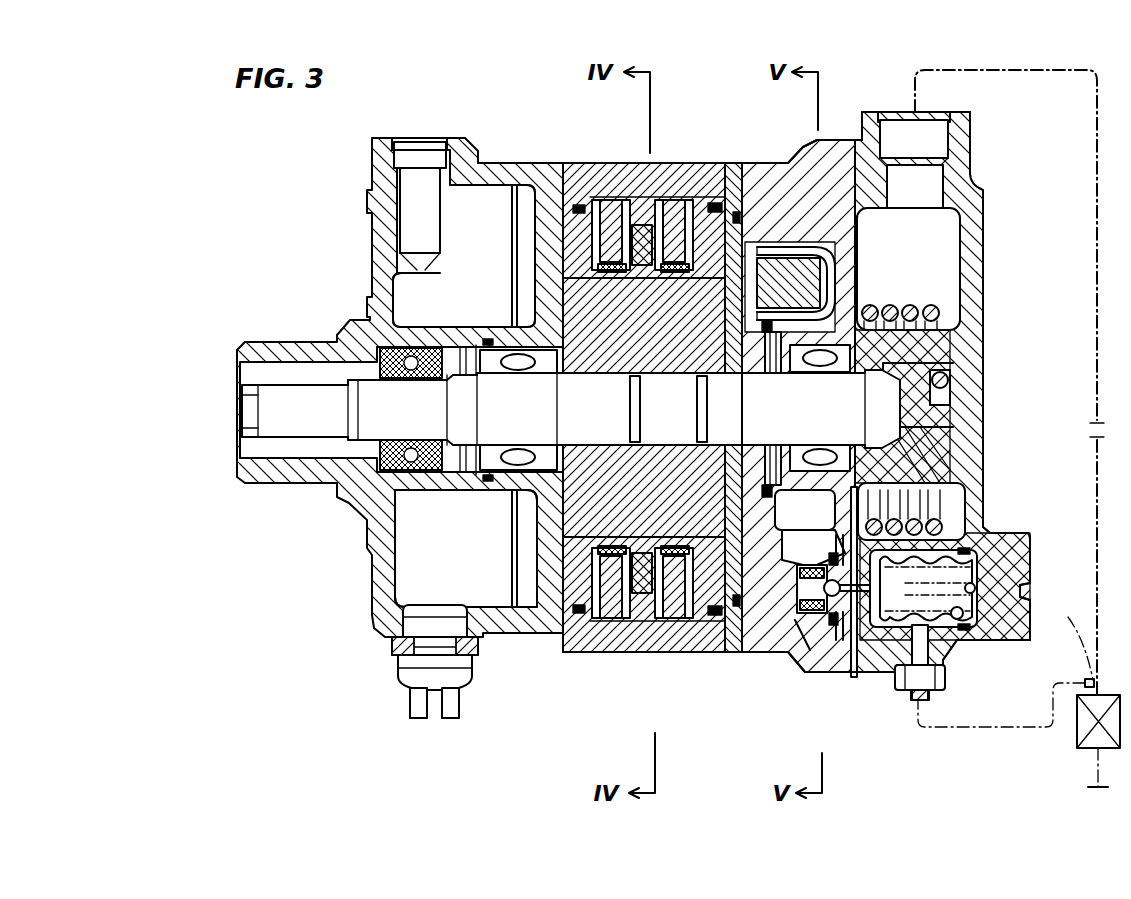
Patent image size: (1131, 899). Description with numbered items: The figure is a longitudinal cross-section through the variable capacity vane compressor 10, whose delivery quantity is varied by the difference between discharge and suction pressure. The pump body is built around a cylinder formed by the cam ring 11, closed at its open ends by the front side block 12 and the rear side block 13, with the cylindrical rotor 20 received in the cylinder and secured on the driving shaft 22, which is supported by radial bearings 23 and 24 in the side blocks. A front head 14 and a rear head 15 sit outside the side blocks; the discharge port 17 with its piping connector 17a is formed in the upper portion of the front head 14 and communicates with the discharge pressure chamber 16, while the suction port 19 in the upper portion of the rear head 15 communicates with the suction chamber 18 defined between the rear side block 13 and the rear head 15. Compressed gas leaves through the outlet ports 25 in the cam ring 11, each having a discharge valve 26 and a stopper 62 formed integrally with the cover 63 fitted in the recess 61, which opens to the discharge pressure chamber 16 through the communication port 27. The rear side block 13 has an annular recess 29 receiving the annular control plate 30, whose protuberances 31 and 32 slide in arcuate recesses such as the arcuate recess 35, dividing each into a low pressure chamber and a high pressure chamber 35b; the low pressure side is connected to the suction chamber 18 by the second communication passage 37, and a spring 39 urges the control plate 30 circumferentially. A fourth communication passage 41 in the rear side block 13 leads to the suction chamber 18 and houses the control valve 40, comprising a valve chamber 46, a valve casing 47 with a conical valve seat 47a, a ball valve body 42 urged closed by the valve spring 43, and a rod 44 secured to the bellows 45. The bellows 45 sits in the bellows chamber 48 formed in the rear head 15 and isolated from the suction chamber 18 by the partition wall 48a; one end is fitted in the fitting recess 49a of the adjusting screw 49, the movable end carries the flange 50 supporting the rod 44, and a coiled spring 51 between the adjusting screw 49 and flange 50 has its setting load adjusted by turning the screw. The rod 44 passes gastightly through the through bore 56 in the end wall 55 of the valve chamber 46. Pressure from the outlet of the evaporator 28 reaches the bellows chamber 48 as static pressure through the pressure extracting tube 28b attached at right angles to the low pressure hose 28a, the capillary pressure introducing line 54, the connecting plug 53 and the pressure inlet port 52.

The variable capacity vane compressor 10 is at (749, 151).
The cam ring 11 is at (733, 170).
The front side block 12 is at (545, 163).
The rear side block 13 is at (775, 170).
The front head 14 is at (372, 180).
The rear head 15 is at (983, 195).
The discharge pressure chamber 16 is at (400, 292).
The discharge port 17 is at (410, 208).
The piping connector 17a is at (432, 150).
The suction chamber 18 is at (960, 275).
The suction port 19 is at (940, 118).
The cylindrical rotor 20 is at (690, 600).
The driving shaft 22 is at (617, 435).
The radial bearing 23 is at (515, 355).
The radial bearing 24 is at (856, 355).
The outlet port 25 is at (607, 262).
The discharge valve 26 is at (622, 215).
The communication port 27 is at (567, 600).
The evaporator 28 is at (1077, 720).
The outlet line or low pressure hose 28a is at (1097, 400).
The pressure extracting tube 28b is at (1067, 638).
The annular recess 29 is at (738, 530).
The annular control plate 30 is at (795, 537).
The protuberance 31 is at (760, 305).
The protuberance 32 is at (642, 573).
The arcuate recess 35 is at (800, 283).
The high pressure chamber 35b is at (927, 443).
The second communication passage 37 is at (855, 265).
The spring 39 is at (940, 312).
The control valve 40 is at (810, 592).
The fourth communication passage 41 is at (745, 600).
The valve body 42 is at (800, 580).
The valve spring 43 is at (815, 600).
The rod 44 is at (855, 677).
The bellows 45 is at (862, 592).
The valve chamber 46 is at (775, 570).
The valve casing 47 is at (840, 600).
The valve seat 47a is at (836, 600).
The bellows chamber 48 is at (950, 540).
The partition wall 48a is at (940, 513).
The adjusting screw 49 is at (1020, 562).
The fitting recess 49a is at (977, 580).
The flange 50 is at (872, 592).
The coiled spring 51 is at (930, 640).
The pressure inlet port 52 is at (938, 672).
The connecting plug 53 is at (920, 700).
The pressure introducing line 54 is at (985, 727).
The end wall 55 is at (835, 478).
The through bore 56 is at (803, 487).
The recess 61 is at (570, 163).
The stopper 62 is at (562, 660).
The cover 63 is at (668, 178).